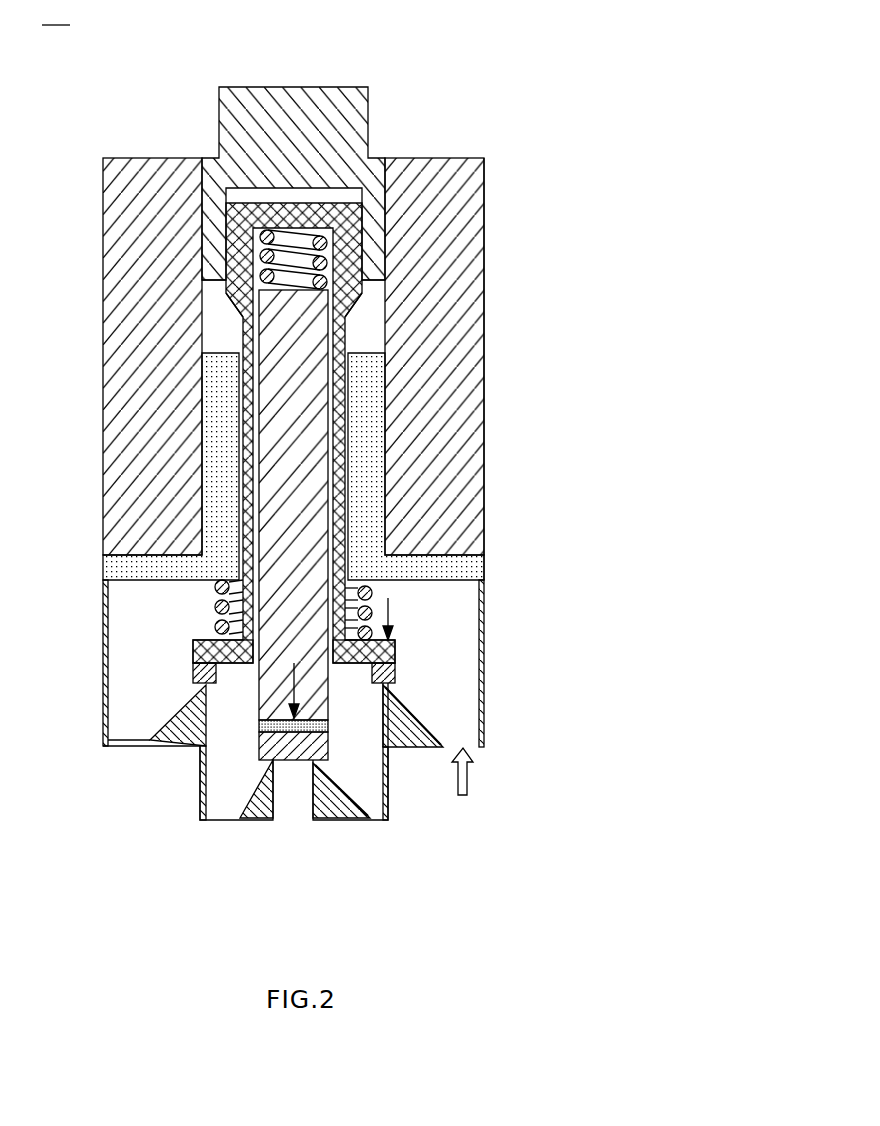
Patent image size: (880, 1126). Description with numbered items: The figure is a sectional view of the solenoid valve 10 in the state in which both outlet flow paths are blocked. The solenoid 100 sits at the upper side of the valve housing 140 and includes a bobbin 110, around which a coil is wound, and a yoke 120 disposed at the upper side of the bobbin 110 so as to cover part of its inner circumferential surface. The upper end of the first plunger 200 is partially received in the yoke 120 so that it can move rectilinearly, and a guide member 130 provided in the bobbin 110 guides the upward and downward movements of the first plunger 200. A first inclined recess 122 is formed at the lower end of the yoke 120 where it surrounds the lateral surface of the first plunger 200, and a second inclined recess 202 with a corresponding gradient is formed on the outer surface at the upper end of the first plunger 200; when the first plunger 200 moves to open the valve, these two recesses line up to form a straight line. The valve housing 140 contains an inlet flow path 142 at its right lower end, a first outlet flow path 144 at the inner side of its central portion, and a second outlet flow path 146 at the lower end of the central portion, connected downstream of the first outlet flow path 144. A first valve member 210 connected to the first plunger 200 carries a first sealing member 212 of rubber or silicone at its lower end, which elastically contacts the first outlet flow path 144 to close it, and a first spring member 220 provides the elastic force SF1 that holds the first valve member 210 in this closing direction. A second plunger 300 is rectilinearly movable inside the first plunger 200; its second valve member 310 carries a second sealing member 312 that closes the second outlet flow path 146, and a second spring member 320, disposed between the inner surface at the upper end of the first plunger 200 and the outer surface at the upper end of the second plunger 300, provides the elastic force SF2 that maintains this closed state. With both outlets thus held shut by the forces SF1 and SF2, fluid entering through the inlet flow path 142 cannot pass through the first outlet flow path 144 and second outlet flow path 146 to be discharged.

The solenoid valve 10 is at (56, 14).
The solenoid 100 is at (496, 228).
The bobbin 110 is at (473, 202).
The yoke 120 is at (355, 121).
The first inclined recess 122 is at (213, 272).
The guide member 130 is at (103, 568).
The valve housing 140 is at (105, 668).
The inlet flow path 142 is at (475, 745).
The first outlet flow path 144 is at (195, 673).
The second outlet flow path 146 is at (273, 760).
The first plunger 200 is at (342, 337).
The second inclined recess 202 is at (233, 312).
The first valve member 210 is at (393, 650).
The first sealing member 212 is at (397, 673).
The first spring member 220 is at (373, 593).
The second plunger 300 is at (305, 440).
The second valve member 310 is at (318, 725).
The second sealing member 312 is at (320, 758).
The second spring member 320 is at (330, 262).
The elastic force of the first spring member SF1 is at (392, 614).
The elastic force of the second spring member SF2 is at (315, 765).